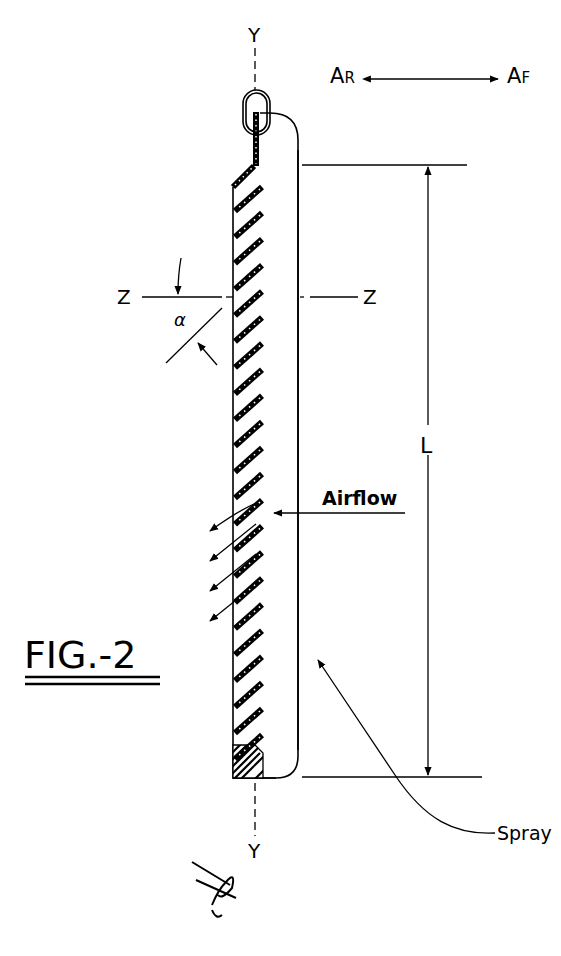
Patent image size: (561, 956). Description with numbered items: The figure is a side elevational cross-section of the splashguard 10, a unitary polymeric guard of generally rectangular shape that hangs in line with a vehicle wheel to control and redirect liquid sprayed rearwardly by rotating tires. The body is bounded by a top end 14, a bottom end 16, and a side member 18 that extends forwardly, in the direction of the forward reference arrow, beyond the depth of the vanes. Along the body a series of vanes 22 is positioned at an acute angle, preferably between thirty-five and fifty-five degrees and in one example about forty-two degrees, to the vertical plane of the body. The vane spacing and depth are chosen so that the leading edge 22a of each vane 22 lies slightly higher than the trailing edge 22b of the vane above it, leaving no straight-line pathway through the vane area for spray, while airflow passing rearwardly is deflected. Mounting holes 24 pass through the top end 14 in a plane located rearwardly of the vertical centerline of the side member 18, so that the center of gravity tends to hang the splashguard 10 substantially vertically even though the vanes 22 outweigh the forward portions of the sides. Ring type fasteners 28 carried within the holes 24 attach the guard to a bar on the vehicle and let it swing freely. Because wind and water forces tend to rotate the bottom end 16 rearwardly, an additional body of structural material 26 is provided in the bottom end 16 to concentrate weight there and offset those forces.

The splashguard 10 is at (220, 234).
The top end 14 is at (250, 160).
The bottom end 16 is at (231, 771).
The side member 18 is at (300, 392).
The vanes 22 is at (243, 410).
The leading edge 22a is at (243, 462).
The trailing edge 22b is at (243, 474).
The mounting holes 24 is at (252, 136).
The additional body of structural material 26 is at (262, 765).
The ring type fasteners 28 is at (244, 92).